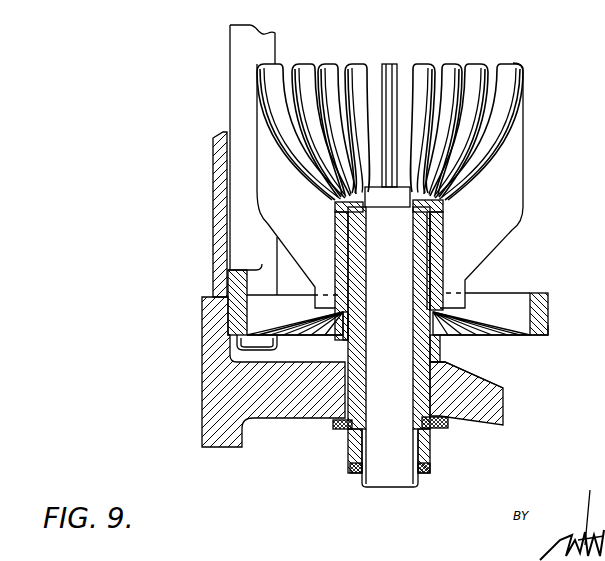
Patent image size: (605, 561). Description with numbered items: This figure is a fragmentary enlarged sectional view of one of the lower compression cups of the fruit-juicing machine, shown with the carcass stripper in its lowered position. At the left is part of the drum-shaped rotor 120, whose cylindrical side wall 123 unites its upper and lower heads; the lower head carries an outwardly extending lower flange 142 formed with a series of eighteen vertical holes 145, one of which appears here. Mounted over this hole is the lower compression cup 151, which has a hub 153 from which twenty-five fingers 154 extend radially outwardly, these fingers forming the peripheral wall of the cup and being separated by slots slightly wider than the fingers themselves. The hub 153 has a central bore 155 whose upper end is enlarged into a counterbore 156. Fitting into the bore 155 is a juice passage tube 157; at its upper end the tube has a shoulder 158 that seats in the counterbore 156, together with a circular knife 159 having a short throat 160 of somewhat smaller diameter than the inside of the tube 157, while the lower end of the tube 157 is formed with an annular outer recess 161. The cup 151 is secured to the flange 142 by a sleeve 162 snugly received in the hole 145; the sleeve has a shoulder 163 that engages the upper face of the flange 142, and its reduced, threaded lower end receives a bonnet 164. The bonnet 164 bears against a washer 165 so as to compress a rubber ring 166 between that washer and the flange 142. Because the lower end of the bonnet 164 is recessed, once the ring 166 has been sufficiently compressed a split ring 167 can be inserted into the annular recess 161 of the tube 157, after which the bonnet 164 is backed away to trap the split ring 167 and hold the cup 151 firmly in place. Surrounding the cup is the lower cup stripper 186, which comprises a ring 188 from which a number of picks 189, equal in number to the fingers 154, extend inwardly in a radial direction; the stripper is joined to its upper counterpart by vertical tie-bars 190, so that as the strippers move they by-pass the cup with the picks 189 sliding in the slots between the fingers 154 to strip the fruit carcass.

The rotor 120 is at (206, 350).
The cylindrical side wall 123 is at (220, 192).
The lower flange 142 is at (482, 384).
The vertical hole 145 is at (442, 367).
The lower compression cup 151 is at (499, 223).
The hub 153 is at (438, 216).
The fingers 154 is at (512, 147).
The bore 155 is at (420, 270).
The counterbore 156 is at (440, 232).
The juice passage tube 157 is at (413, 298).
The shoulder 158 is at (347, 207).
The circular knife 159 is at (358, 209).
The throat 160 is at (388, 206).
The annular outer recess 161 is at (427, 478).
The sleeve 162 is at (428, 400).
The shoulder 163 is at (428, 340).
The bonnet 164 is at (430, 455).
The washer 165 is at (335, 431).
The rubber ring 166 is at (333, 424).
The split ring 167 is at (355, 476).
The lower cup stripper 186 is at (545, 305).
The ring 188 is at (549, 323).
The picks 189 is at (498, 302).
The vertical tie-bars 190 is at (268, 53).